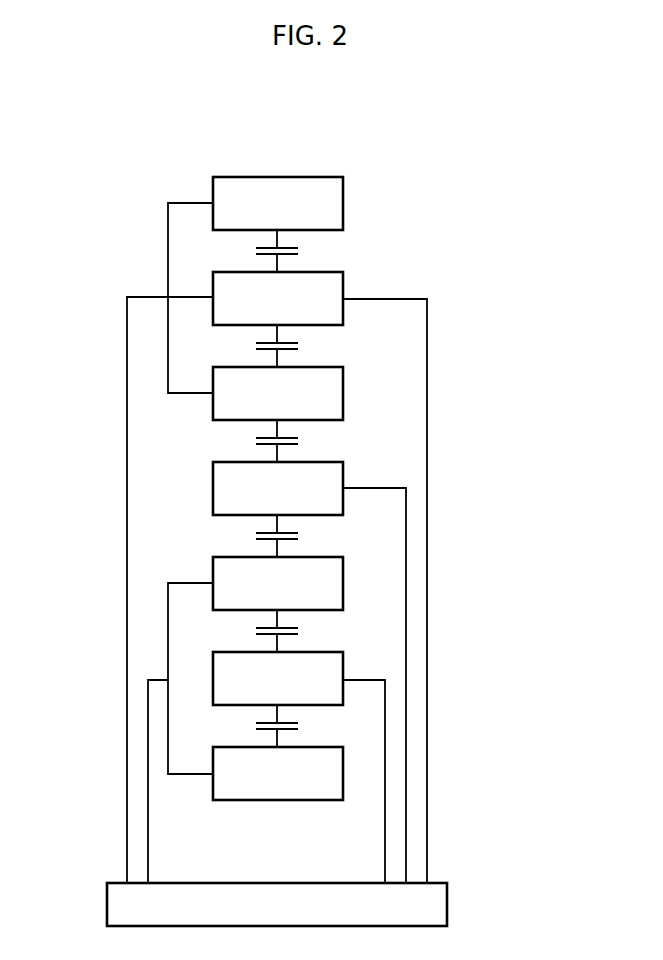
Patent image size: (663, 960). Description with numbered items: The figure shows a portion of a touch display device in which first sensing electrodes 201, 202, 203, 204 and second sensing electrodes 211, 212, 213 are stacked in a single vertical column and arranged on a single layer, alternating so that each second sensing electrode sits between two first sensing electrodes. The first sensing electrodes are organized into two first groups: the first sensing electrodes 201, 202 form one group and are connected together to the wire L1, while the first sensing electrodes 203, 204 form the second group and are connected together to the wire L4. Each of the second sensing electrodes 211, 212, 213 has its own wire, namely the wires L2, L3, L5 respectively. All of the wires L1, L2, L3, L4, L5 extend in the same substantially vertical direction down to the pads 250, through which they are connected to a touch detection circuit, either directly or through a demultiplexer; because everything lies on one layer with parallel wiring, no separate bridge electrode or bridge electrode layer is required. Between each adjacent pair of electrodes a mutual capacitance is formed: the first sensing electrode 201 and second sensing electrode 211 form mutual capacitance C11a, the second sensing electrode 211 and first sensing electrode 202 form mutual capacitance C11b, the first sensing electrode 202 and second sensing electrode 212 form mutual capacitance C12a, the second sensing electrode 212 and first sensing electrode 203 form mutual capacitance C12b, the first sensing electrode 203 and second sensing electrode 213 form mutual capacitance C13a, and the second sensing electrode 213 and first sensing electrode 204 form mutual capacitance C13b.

The first sensing electrode 201 is at (278, 203).
The second sensing electrode 211 is at (278, 298).
The first sensing electrode 202 is at (278, 393).
The second sensing electrode 212 is at (278, 488).
The first sensing electrode 203 is at (278, 583).
The second sensing electrode 213 is at (278, 678).
The first sensing electrode 204 is at (278, 773).
The pads 250 is at (447, 905).
The wire L1 is at (127, 522).
The wire L2 is at (427, 427).
The wire L3 is at (407, 626).
The wire L4 is at (148, 778).
The wire L5 is at (385, 783).
The mutual capacitance C11a is at (305, 251).
The mutual capacitance C11b is at (305, 346).
The mutual capacitance C12a is at (305, 441).
The mutual capacitance C12b is at (305, 536).
The mutual capacitance C13a is at (305, 631).
The mutual capacitance C13b is at (305, 726).